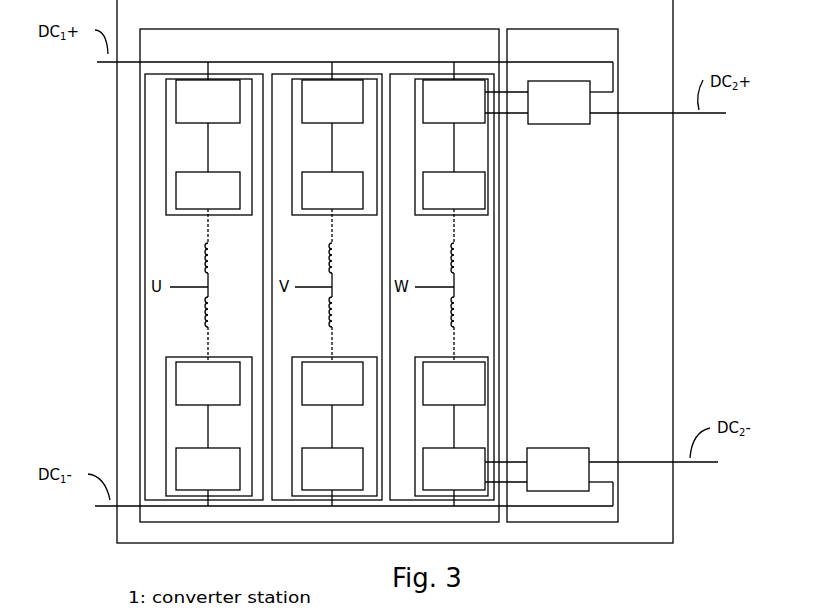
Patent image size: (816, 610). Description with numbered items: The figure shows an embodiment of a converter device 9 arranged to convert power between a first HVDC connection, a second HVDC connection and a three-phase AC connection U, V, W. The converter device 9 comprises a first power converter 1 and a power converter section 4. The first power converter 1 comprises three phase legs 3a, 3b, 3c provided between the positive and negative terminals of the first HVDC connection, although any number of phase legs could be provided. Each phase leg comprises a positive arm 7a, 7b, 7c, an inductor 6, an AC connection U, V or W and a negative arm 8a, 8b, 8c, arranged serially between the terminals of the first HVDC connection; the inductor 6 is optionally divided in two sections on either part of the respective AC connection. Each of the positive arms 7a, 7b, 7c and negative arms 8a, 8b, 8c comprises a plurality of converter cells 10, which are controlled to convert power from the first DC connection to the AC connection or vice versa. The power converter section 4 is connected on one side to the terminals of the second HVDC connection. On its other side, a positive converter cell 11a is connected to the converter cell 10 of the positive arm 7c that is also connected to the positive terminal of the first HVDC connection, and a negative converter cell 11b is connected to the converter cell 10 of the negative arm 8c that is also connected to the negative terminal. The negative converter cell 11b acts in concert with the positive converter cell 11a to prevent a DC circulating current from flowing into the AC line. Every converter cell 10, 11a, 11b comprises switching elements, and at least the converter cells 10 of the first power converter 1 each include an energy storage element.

The first power converter 1 is at (315, 55).
The phase leg 3a is at (158, 73).
The phase leg 3b is at (354, 73).
The phase leg 3c is at (417, 73).
The power converter section 4 is at (556, 55).
The inductor 6 is at (307, 287).
The positive arm 7a is at (220, 221).
The positive arm 7b is at (344, 221).
The positive arm 7c is at (466, 221).
The negative arm 8a is at (215, 349).
The negative arm 8b is at (339, 349).
The negative arm 8c is at (461, 349).
The converter device 9 is at (390, 18).
The converter cell 10 is at (198, 111).
The positive converter cell 11a is at (544, 111).
The negative converter cell 11b is at (543, 478).